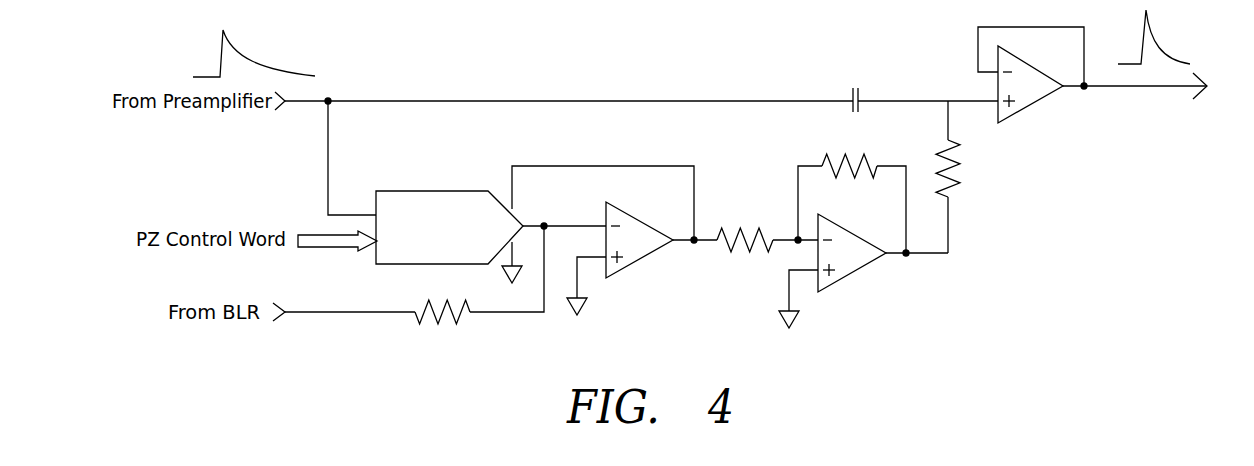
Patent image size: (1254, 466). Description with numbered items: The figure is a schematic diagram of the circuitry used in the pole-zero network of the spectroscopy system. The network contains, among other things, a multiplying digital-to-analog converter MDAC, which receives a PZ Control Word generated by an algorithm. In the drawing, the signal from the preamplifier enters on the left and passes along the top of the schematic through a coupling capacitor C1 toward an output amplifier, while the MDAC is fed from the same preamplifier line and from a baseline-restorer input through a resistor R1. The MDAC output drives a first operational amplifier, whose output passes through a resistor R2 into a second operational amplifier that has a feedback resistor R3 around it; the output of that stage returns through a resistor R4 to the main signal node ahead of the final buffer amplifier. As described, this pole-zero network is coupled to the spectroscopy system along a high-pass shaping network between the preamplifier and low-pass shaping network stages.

The coupling capacitor C1 is at (920, 84).
The resistor from baseline restorer R1 is at (442, 298).
The resistor between amplifier stages R2 is at (745, 225).
The feedback resistor of second amplifier R3 is at (852, 188).
The resistor to summing node R4 is at (967, 177).
The multiplying digital-to-analog converter MDAC is at (449, 227).